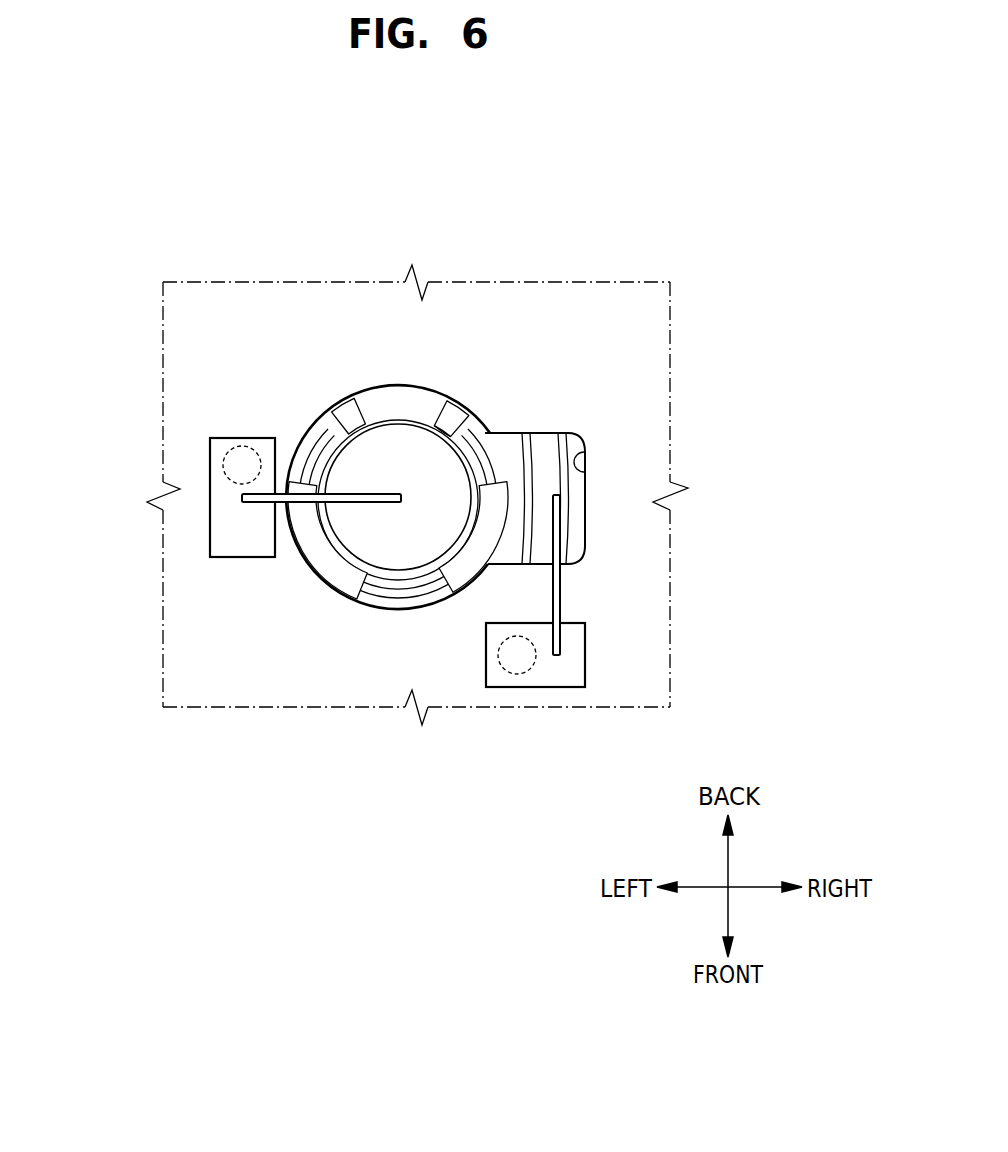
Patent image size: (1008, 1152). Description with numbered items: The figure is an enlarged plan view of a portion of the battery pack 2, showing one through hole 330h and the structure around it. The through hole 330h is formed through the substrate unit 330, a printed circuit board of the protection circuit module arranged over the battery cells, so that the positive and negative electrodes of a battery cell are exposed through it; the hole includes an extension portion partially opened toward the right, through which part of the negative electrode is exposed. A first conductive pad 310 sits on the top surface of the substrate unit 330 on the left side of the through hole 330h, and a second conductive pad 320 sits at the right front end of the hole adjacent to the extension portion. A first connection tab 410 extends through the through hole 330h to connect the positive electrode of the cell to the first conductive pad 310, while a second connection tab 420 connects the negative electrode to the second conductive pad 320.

The battery pack 2 is at (716, 173).
The first conductive pad 310 is at (223, 532).
The second conductive pad 320 is at (568, 670).
The substrate unit 330 is at (637, 385).
The through hole 330h is at (440, 425).
The first connection tab 410 is at (363, 497).
The second connection tab 420 is at (557, 594).